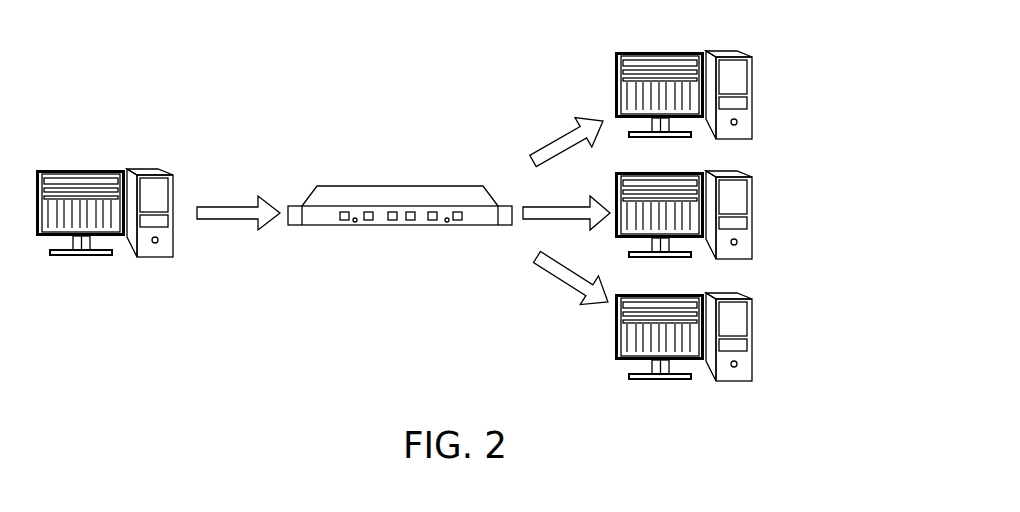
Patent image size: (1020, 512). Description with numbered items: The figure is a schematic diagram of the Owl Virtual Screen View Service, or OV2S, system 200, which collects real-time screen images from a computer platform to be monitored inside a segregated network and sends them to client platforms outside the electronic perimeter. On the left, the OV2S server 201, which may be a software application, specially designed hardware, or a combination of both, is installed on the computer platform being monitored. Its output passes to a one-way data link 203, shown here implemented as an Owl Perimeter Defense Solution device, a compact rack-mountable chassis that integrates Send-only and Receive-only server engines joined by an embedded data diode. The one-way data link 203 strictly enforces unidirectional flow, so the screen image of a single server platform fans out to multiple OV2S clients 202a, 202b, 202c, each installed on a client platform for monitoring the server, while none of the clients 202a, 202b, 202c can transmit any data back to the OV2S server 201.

The OV2S system 200 is at (303, 108).
The OV2S server 201 is at (190, 258).
The OV2S client 202a is at (761, 382).
The OV2S client 202b is at (761, 253).
The OV2S client 202c is at (763, 131).
The one-way data link 203 is at (435, 283).